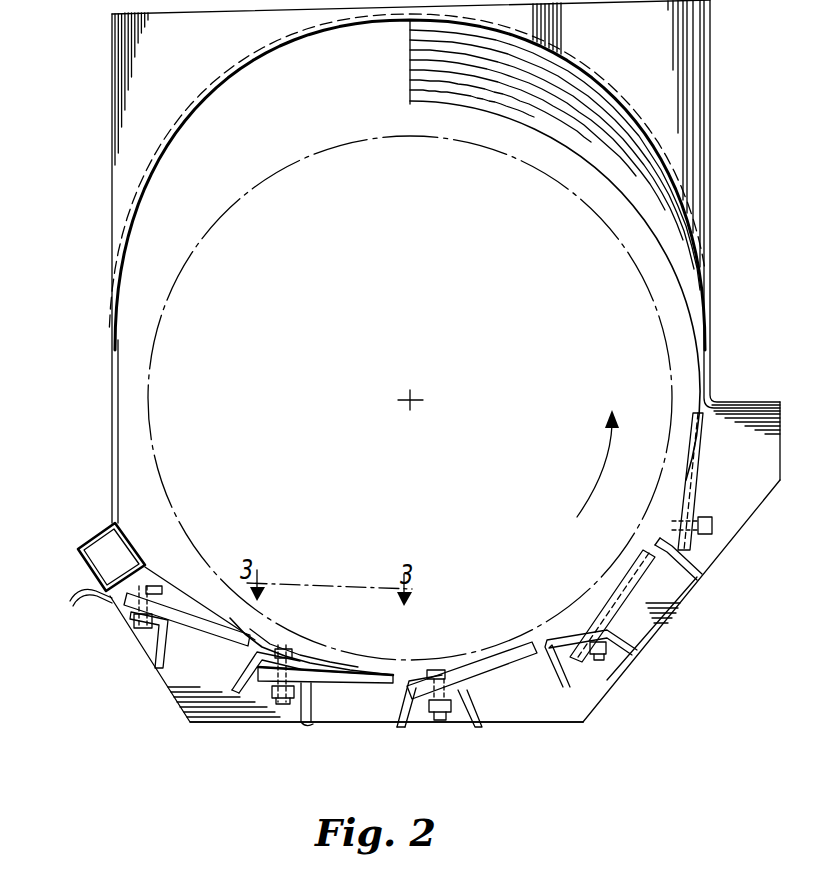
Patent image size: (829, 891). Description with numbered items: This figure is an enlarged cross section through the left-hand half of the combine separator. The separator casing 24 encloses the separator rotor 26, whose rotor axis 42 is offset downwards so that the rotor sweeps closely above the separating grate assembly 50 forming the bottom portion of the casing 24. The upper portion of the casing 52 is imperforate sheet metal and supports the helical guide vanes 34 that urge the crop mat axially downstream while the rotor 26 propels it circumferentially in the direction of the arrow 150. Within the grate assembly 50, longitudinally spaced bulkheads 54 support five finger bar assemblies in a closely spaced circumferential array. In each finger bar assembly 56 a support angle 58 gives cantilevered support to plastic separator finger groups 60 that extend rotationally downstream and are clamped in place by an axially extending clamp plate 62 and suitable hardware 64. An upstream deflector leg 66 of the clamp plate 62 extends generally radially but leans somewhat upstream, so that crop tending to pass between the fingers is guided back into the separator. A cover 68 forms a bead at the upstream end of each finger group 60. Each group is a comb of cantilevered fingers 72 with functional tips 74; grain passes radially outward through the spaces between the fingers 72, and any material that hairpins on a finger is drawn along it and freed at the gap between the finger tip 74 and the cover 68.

The separator casing 24 is at (100, 222).
The separator rotor 26 is at (150, 374).
The guide vanes 34 is at (410, 118).
The rotor axis 42 is at (414, 394).
The separating grate assembly 50 is at (524, 735).
The upper portion of the casing 52 is at (227, 78).
The bulkhead 54 is at (622, 678).
The finger bar assembly 56 is at (572, 578).
The support angle 58 is at (310, 727).
The separator finger group 60 is at (331, 708).
The clamp plate 62 is at (268, 644).
The hardware 64 is at (433, 723).
The deflector leg 66 is at (248, 674).
The cover 68 is at (277, 650).
The finger 72 is at (351, 662).
The finger tip 74 is at (260, 651).
The arrow 150 is at (601, 474).